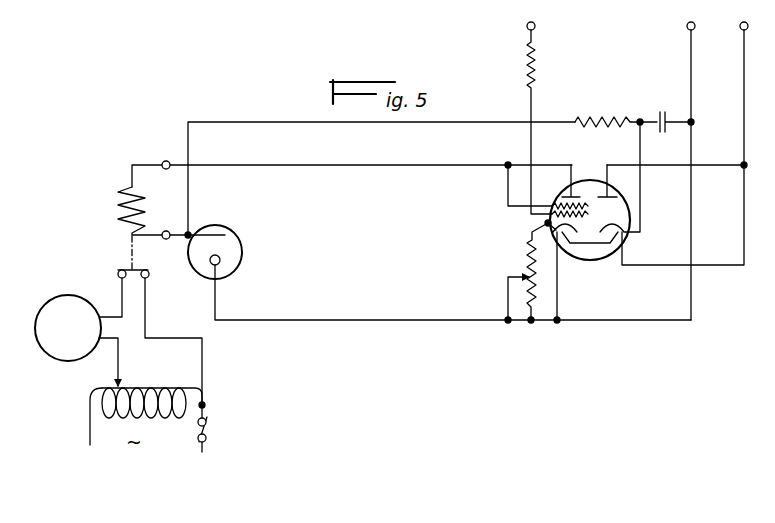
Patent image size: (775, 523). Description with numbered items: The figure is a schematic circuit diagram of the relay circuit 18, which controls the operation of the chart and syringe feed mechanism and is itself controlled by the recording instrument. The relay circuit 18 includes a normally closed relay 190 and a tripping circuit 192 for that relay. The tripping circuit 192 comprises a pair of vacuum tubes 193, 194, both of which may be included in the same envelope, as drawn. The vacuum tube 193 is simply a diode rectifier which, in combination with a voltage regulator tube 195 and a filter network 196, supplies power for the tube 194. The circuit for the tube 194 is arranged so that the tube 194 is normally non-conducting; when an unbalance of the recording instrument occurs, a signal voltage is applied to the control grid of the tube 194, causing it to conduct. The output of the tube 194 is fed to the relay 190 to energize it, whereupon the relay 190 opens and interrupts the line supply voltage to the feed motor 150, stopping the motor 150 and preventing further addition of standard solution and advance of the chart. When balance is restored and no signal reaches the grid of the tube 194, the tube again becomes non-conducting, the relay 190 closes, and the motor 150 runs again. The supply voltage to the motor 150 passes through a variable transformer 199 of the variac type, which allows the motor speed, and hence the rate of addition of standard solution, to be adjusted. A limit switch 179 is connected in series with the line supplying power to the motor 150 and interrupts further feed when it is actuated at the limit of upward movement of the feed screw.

The relay circuit 18 is at (247, 112).
The feed motor 150 is at (67, 297).
The limit switch 179 is at (207, 433).
The normally closed relay 190 is at (124, 233).
The tripping circuit 192 is at (624, 166).
The vacuum tube 193 is at (626, 239).
The vacuum tube 194 is at (545, 224).
The voltage regulator tube 195 is at (242, 256).
The filter network 196 is at (638, 116).
The variable transformer 199 is at (96, 388).